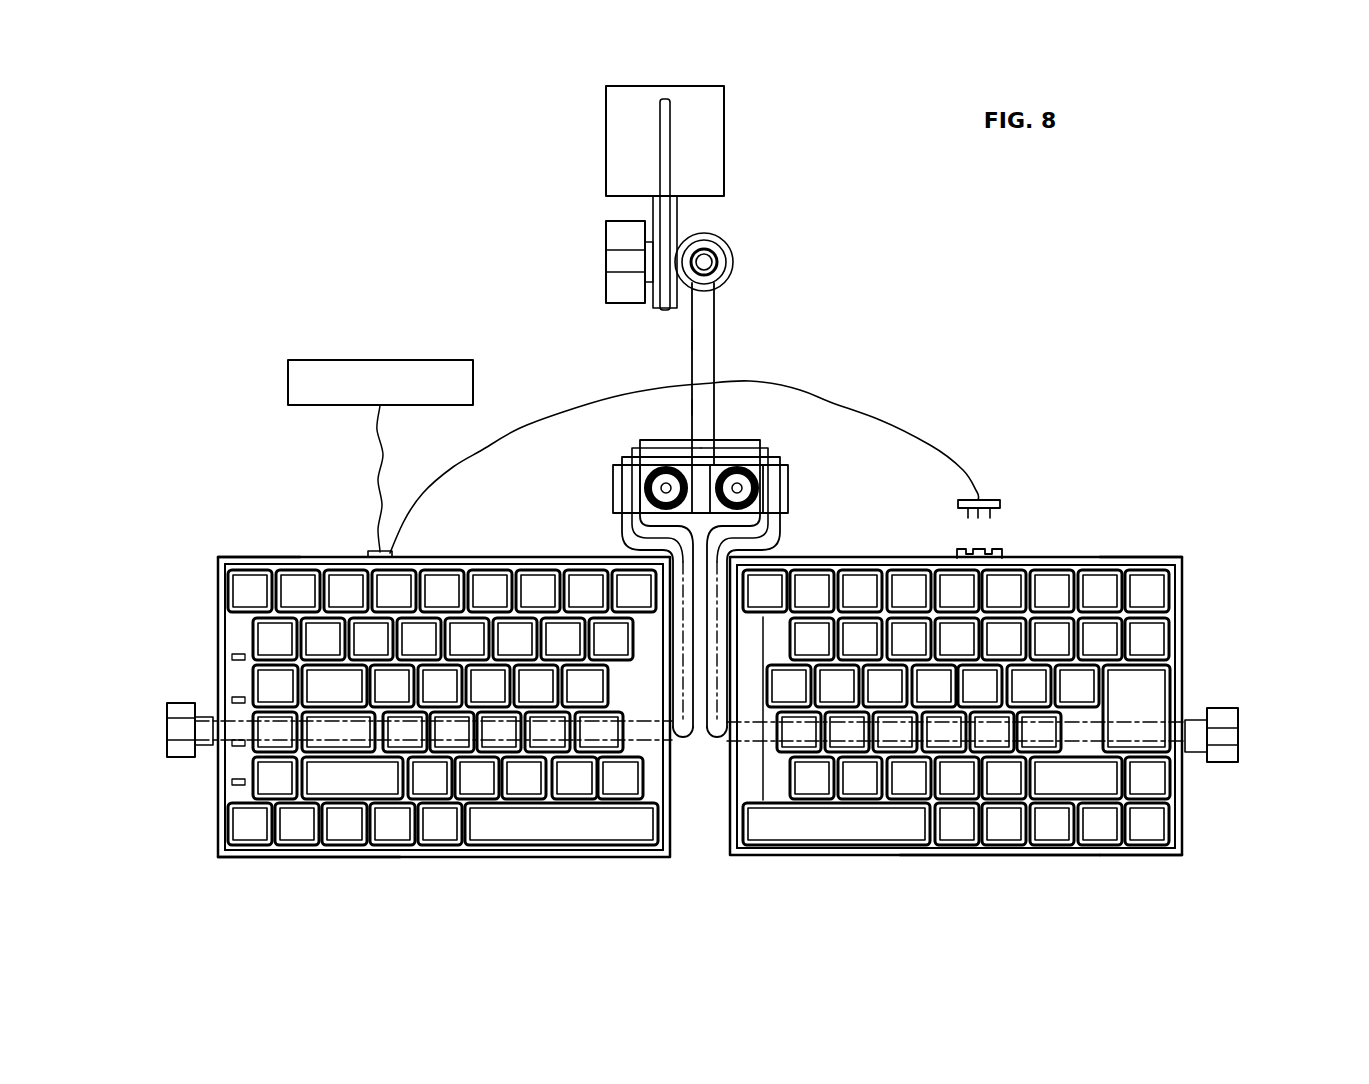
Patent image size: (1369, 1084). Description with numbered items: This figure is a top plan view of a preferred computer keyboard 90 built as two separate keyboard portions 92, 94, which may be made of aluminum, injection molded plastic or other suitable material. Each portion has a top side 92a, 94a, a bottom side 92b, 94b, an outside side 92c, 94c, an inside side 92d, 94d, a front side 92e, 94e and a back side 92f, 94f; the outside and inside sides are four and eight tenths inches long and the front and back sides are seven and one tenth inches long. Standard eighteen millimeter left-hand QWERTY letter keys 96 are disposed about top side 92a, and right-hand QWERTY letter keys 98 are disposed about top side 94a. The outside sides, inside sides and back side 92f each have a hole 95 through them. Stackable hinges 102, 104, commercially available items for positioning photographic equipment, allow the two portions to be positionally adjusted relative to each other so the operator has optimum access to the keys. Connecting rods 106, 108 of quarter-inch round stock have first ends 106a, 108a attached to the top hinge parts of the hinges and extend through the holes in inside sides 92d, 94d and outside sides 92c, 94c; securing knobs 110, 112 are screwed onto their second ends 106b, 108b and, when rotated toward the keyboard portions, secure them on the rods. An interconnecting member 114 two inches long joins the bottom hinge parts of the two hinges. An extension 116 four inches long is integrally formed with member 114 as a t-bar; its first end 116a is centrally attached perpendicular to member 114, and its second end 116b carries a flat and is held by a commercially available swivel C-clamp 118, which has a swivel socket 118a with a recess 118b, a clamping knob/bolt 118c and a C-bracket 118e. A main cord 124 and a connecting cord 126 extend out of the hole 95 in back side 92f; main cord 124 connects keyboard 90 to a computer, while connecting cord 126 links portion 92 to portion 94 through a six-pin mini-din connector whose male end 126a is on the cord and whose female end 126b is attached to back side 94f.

The computer keyboard 90 is at (1113, 867).
The keyboard portion 92 is at (228, 560).
The top side 92a is at (250, 562).
The bottom side 92b is at (362, 856).
The outside side 92c is at (222, 607).
The inside side 92d is at (678, 857).
The front side 92e is at (460, 858).
The back side 92f is at (485, 555).
The keyboard portion 94 is at (1185, 565).
The top side 94a is at (1150, 565).
The bottom side 94b is at (975, 858).
The outside side 94c is at (1180, 612).
The inside side 94d is at (737, 856).
The front side 94e is at (842, 858).
The back side 94f is at (887, 560).
The hole 95 is at (393, 553).
The letter keys 96 is at (540, 683).
The letter keys 98 is at (840, 687).
The stackable hinge 102 is at (668, 450).
The stackable hinge 104 is at (752, 455).
The connecting rod 106 is at (627, 547).
The first end 106a is at (655, 468).
The second end 106b is at (212, 712).
The connecting rod 108 is at (783, 527).
The first end 108a is at (760, 468).
The second end 108b is at (1187, 760).
The securing knob 110 is at (167, 712).
The securing knob 112 is at (1238, 712).
The interconnecting member 114 is at (699, 450).
The extension 116 is at (690, 339).
The first end 116a is at (698, 407).
The second end 116b is at (708, 300).
The swivel C-clamp 118 is at (708, 103).
The swivel socket 118a is at (710, 240).
The recess 118b is at (700, 290).
The clamping knob/bolt 118c is at (606, 243).
The C-bracket 118e is at (615, 150).
The main cord 124 is at (378, 493).
The connecting cord 126 is at (461, 463).
The male end 126a is at (988, 497).
The female end 126b is at (1003, 557).